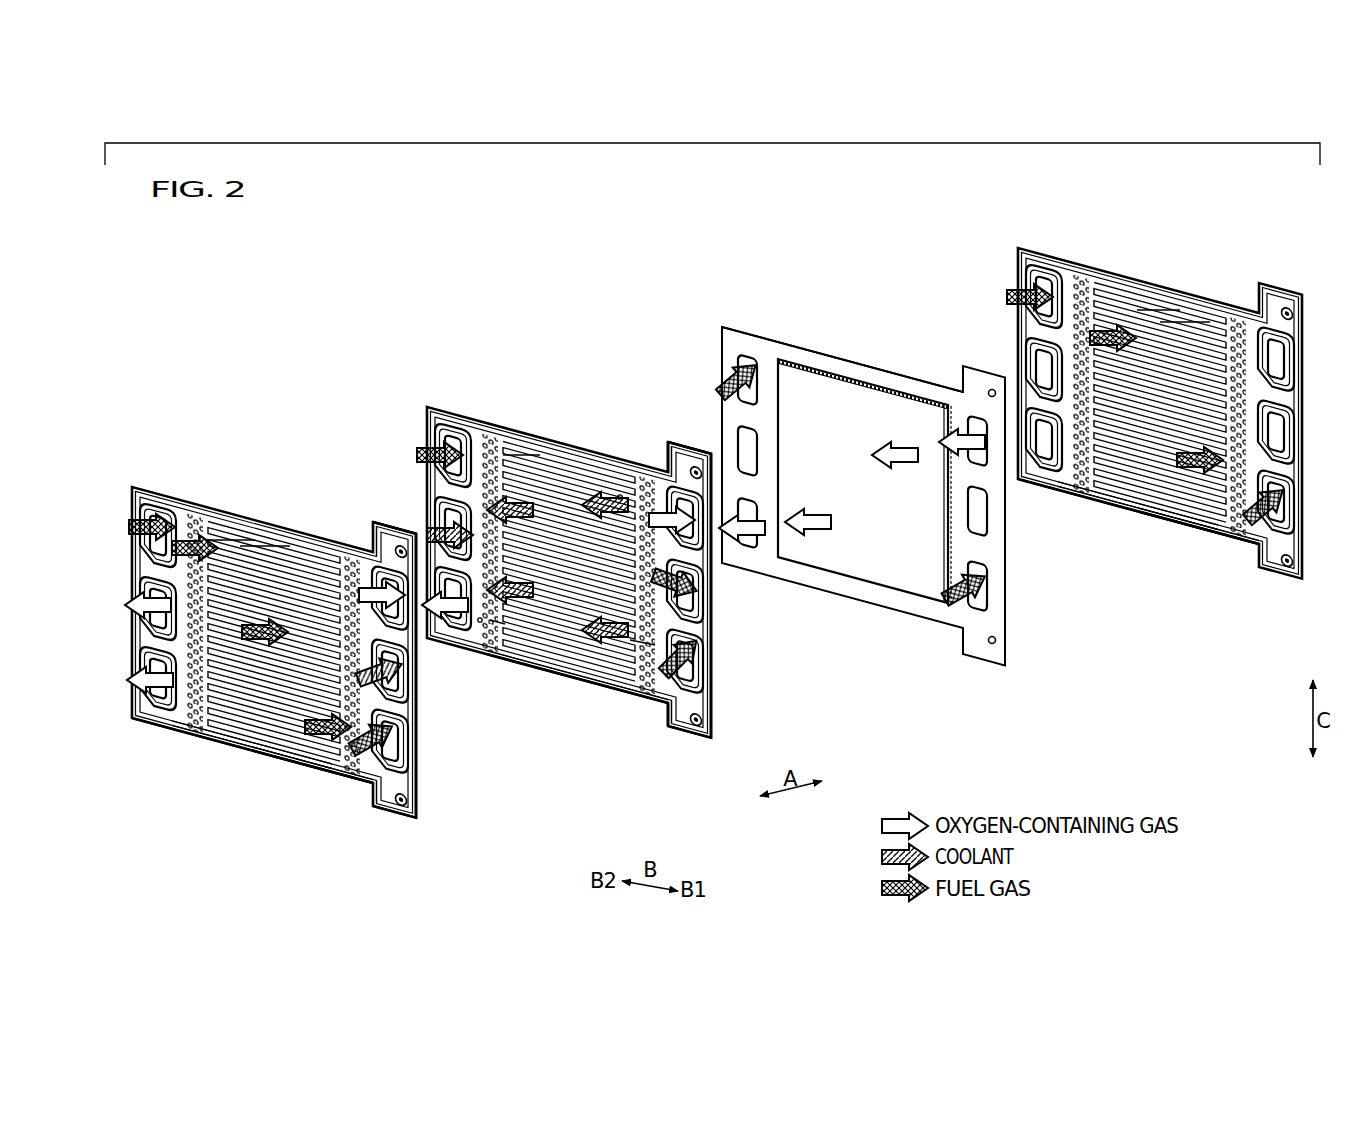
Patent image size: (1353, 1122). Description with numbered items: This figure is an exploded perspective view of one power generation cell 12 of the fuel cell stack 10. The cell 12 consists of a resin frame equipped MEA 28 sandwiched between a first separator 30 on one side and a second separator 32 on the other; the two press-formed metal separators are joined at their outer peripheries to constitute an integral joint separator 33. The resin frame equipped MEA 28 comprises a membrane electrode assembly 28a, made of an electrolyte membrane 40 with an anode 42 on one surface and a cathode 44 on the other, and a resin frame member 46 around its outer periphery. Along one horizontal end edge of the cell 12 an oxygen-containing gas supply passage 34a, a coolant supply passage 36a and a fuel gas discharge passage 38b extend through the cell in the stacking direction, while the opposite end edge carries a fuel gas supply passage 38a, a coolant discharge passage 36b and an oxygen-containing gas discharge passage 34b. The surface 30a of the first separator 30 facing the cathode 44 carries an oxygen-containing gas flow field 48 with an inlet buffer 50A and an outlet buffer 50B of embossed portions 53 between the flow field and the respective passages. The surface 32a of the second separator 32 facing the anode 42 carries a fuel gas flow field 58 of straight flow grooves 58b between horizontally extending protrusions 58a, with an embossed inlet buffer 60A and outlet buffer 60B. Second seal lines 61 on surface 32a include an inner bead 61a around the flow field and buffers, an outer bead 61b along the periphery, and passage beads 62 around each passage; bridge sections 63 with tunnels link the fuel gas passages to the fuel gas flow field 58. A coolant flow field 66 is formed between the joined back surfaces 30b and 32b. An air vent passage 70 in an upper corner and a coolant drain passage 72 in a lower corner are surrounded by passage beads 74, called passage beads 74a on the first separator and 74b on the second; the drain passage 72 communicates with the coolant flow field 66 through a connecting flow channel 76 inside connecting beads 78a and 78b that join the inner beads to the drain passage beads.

The fuel cell stack 10 is at (340, 229).
The power generation cell 12 is at (487, 228).
The resin frame equipped MEA 28 is at (721, 328).
The membrane electrode assembly 28a is at (800, 286).
The first metal separator 30 is at (488, 404).
The surface of first separator 30a is at (553, 662).
The surface of first separator 30b is at (586, 670).
The second metal separator 32 is at (133, 484).
The surface of second separator 32a is at (303, 760).
The surface of second separator 32b is at (307, 752).
The joint separator 33 is at (332, 405).
The oxygen-containing gas supply passage 34a is at (375, 570).
The oxygen-containing gas discharge passage 34b is at (157, 702).
The coolant supply passage 36a is at (388, 680).
The coolant discharge passage 36b is at (132, 665).
The fuel gas supply passage 38a is at (1042, 297).
The fuel gas discharge passage 38b is at (372, 760).
The electrolyte membrane 40 is at (852, 378).
The anode 42 is at (836, 372).
The cathode 44 is at (808, 388).
The resin frame member 46 is at (764, 345).
The oxygen-containing gas flow field 48 is at (548, 468).
The inlet buffer 50A is at (655, 642).
The outlet buffer 50B is at (490, 622).
The bosses 53 is at (620, 497).
The fuel gas flow field 58 is at (283, 472).
The protrusions 58a is at (222, 540).
The flow grooves 58b is at (260, 545).
The inlet buffer 60A is at (202, 705).
The outlet buffer 60B is at (347, 742).
The second seal lines 61 is at (282, 762).
The inner bead 61a is at (240, 725).
The outer bead 61b is at (262, 752).
The passage beads 62 is at (146, 520).
The bridge sections 63 is at (178, 535).
The coolant flow field 66 is at (518, 455).
The air vent passage 70 is at (403, 543).
The coolant drain passage 72 is at (407, 802).
The passage beads 74 is at (542, 488).
The passage beads of first separator 74a is at (710, 810).
The passage beads of second separator 74b is at (430, 880).
The connecting flow channel 76 is at (672, 457).
The connecting bead 78a is at (684, 468).
The connecting bead 78b is at (380, 548).